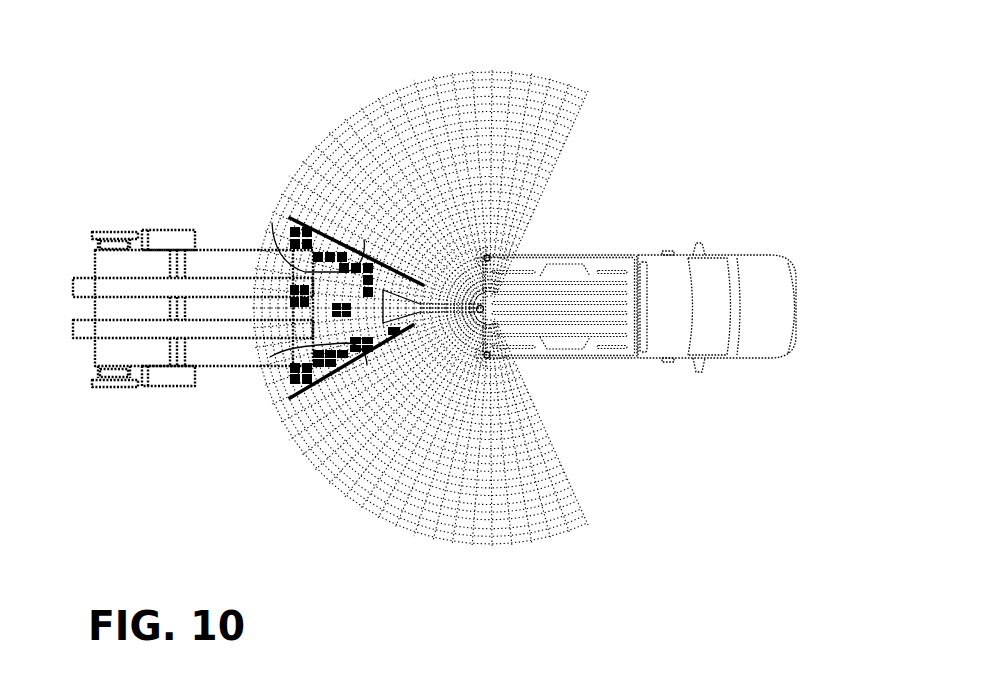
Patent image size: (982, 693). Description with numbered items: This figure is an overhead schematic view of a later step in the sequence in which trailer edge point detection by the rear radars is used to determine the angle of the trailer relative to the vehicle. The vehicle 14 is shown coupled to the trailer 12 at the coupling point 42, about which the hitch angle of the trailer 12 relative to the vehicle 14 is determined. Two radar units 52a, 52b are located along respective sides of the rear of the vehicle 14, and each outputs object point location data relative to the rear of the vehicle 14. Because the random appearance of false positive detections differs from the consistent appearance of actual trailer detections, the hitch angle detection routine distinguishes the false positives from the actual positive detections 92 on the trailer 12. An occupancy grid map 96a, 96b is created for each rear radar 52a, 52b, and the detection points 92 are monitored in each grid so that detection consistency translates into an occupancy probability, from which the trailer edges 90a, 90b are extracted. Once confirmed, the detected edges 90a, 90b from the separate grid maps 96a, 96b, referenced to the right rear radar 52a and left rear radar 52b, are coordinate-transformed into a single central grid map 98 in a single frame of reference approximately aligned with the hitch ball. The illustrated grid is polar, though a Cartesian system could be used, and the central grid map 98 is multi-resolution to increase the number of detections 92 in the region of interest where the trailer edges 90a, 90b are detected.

The trailer 12 is at (212, 241).
The vehicle 14 is at (677, 273).
The coupling point 42 is at (478, 304).
The right rear radar unit 52a is at (489, 356).
The left rear radar unit 52b is at (491, 258).
The first trailer edge 90a is at (272, 223).
The second trailer edge 90b is at (270, 357).
The detection points 92 is at (363, 245).
The first grid map 96a is at (565, 132).
The second grid map 96b is at (570, 492).
The central grid map 98 is at (258, 325).